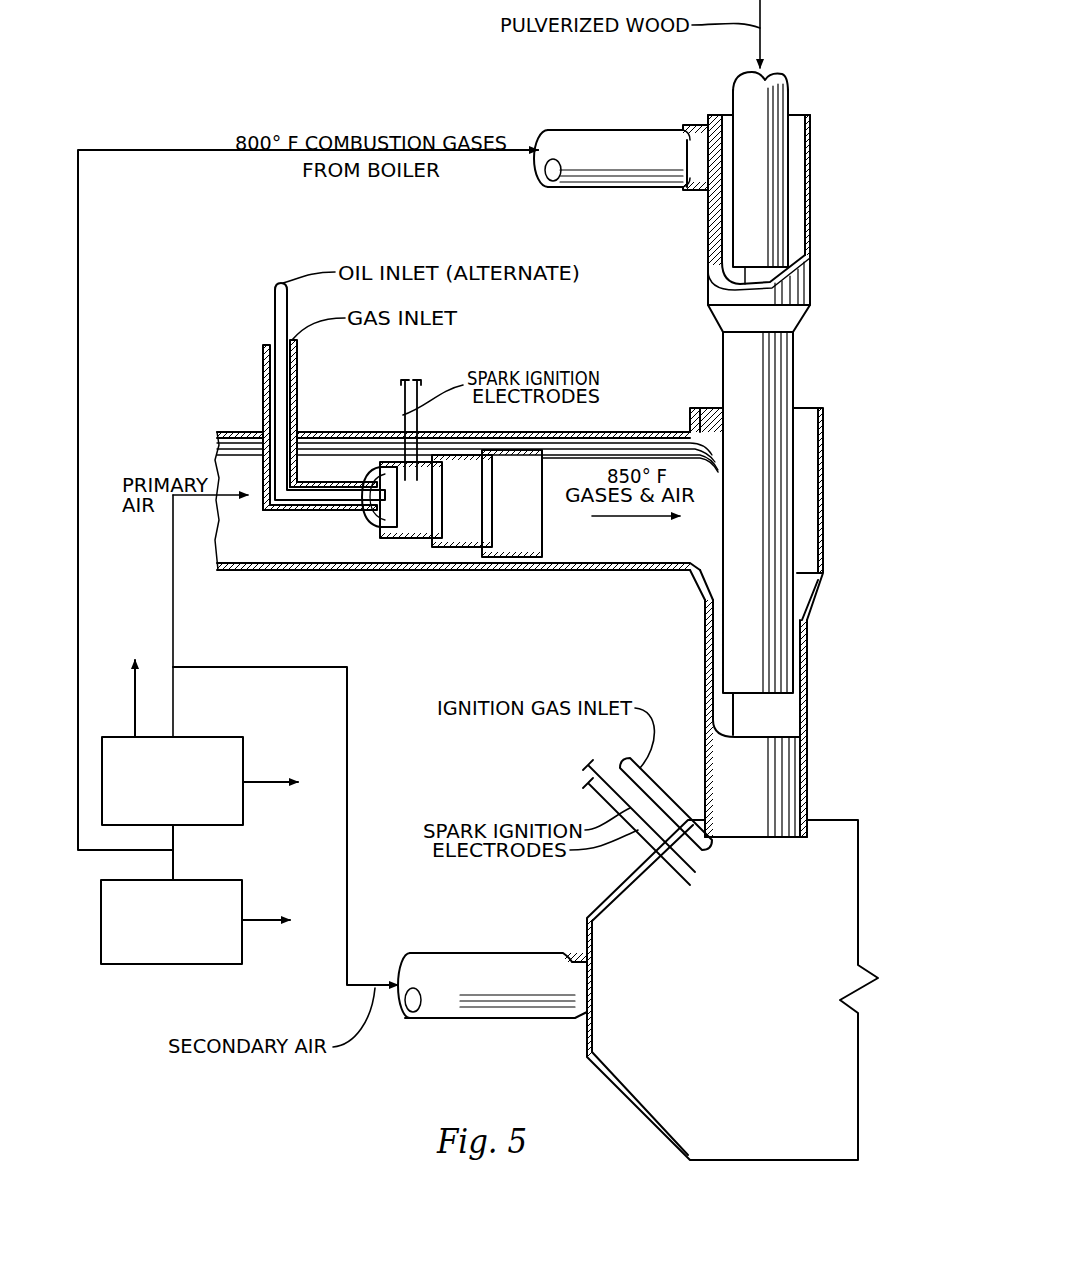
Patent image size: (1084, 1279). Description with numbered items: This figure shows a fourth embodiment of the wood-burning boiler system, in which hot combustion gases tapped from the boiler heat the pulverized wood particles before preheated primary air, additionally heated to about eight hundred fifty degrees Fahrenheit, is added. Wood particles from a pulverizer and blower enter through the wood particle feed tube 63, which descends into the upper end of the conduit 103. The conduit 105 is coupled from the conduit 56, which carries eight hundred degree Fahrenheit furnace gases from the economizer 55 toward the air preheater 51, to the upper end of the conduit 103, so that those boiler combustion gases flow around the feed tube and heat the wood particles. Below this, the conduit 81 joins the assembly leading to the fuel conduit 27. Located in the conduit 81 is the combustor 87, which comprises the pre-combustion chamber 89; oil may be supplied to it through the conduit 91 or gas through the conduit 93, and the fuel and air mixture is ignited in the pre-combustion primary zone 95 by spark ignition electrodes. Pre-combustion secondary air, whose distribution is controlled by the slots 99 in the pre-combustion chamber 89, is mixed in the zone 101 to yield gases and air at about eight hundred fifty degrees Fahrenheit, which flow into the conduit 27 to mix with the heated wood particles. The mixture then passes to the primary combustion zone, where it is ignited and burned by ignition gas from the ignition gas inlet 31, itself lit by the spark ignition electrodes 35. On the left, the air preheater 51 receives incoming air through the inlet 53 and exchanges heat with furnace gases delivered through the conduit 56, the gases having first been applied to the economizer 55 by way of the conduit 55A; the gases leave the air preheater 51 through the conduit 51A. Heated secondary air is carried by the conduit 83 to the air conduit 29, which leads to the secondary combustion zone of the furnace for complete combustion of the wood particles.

The fuel conduit 27 is at (808, 745).
The air conduit 29 is at (505, 953).
The ignition gas inlet 31 is at (648, 802).
The spark ignition electrodes 35 is at (640, 852).
The air preheater 51 is at (193, 737).
The conduit 51A is at (132, 715).
The inlet 53 is at (268, 782).
The economizer 55 is at (185, 965).
The conduit 55A is at (272, 920).
The conduit 56 is at (173, 845).
The wood particle feed tube 63 is at (790, 97).
The conduit 81 is at (633, 571).
The conduit 83 is at (347, 780).
The combustor 87 is at (517, 558).
The pre-combustion chamber 89 is at (460, 548).
The conduit 91 is at (275, 327).
The conduit 93 is at (263, 410).
The pre-combustion primary zone 95 is at (412, 550).
The slots 99 is at (475, 550).
The zone 101 is at (517, 465).
The conduit 103 is at (797, 362).
The conduit 105 is at (188, 150).